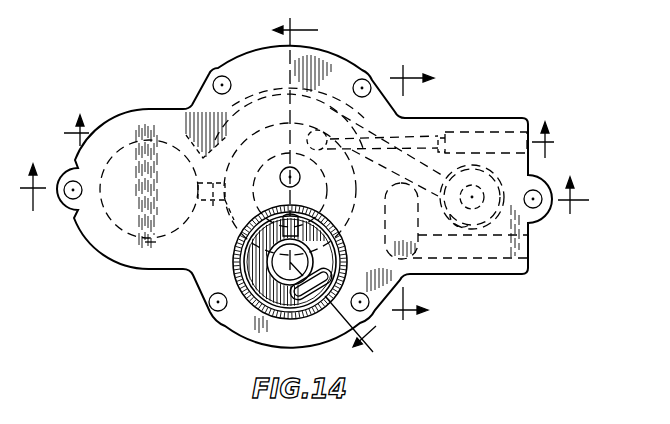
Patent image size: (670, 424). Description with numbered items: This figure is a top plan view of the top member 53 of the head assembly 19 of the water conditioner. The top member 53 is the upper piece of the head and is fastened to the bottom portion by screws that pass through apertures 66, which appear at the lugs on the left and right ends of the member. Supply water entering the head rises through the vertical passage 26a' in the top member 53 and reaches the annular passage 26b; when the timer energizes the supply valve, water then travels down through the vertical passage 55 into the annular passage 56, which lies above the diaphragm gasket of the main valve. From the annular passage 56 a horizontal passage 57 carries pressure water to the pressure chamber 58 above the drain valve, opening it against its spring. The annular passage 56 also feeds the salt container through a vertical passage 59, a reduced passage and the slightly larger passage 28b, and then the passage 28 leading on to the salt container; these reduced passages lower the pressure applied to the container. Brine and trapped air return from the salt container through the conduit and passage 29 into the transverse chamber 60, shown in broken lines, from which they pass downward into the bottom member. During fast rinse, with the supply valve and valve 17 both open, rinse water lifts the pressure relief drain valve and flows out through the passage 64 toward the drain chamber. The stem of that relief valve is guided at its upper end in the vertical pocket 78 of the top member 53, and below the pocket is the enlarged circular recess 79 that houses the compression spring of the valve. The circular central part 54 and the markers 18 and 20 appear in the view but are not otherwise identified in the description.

The valve 17 is at (335, 186).
The section line 18- 18 is at (312, 140).
The head assembly 19 is at (299, 191).
The section line 20- 20 is at (412, 194).
The top member 53 is at (249, 56).
The passage 64 is at (272, 90).
The vertical passage 59 is at (318, 150).
The annular passage 26b is at (296, 214).
The transverse chamber 60 is at (393, 185).
The annular passage 56 is at (349, 207).
The hub ring 54 is at (313, 262).
The vertical passage 55 is at (280, 262).
The horizontal passage 57 is at (210, 169).
The pressure chamber 58 is at (170, 217).
The apertures 66 is at (72, 197).
The salt container inlet conduit 28 is at (482, 135).
The passage 28b is at (424, 135).
The vertical pocket 78 is at (481, 192).
The enlarged circular recess 79 is at (456, 216).
The conduit and passage 29 is at (528, 248).
The vertical passage 26a' is at (311, 315).